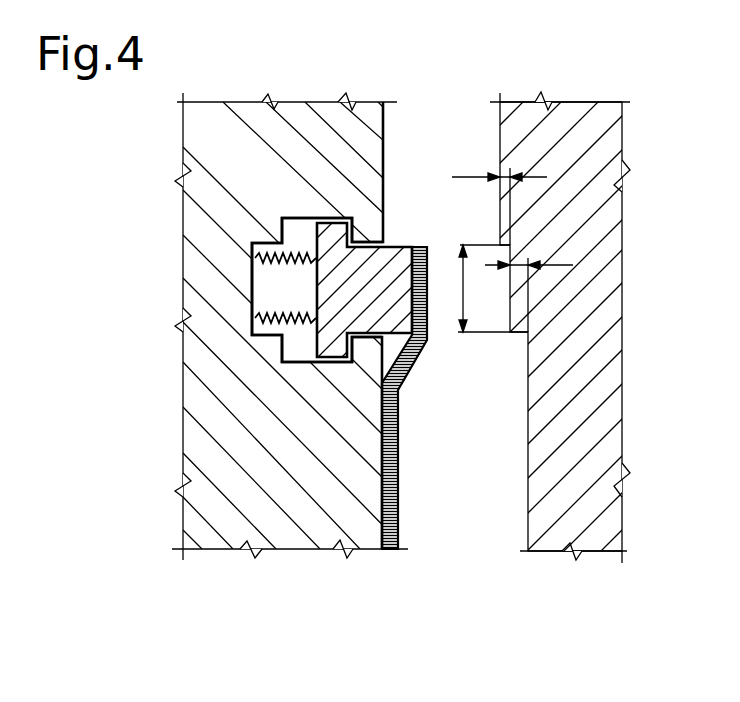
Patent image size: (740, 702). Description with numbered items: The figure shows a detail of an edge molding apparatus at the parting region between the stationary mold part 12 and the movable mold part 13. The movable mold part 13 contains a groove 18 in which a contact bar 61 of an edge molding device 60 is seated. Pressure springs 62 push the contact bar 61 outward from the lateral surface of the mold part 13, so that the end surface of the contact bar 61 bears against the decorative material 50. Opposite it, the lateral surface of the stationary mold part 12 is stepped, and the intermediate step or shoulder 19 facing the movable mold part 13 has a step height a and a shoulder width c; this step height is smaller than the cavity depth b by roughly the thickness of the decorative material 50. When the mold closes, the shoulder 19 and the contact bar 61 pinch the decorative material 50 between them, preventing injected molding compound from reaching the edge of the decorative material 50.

The edge molding device 60 is at (430, 36).
The stationary mold part 12 is at (550, 130).
The movable mold part 13 is at (255, 493).
The groove 18 is at (297, 232).
The intermediate step 19 is at (597, 228).
The decorative material 50 is at (377, 545).
The contact bar 61 is at (325, 235).
The pressure springs 62 is at (252, 327).